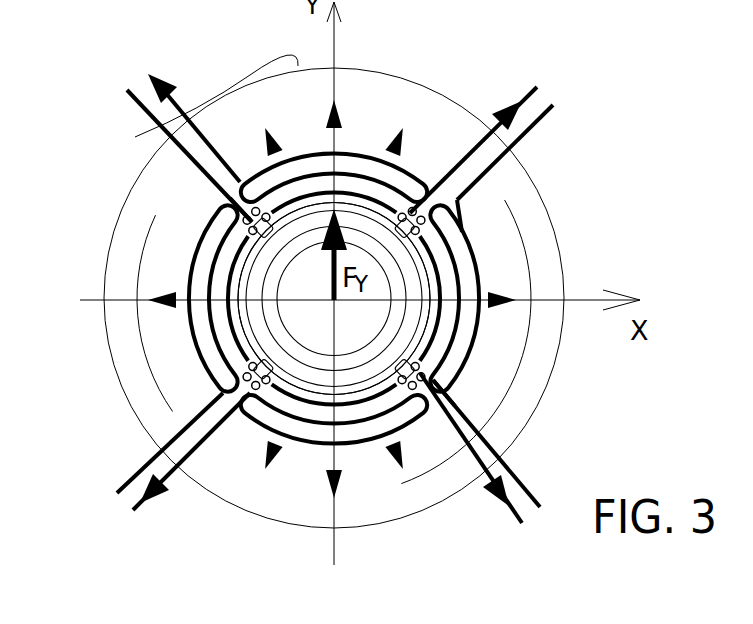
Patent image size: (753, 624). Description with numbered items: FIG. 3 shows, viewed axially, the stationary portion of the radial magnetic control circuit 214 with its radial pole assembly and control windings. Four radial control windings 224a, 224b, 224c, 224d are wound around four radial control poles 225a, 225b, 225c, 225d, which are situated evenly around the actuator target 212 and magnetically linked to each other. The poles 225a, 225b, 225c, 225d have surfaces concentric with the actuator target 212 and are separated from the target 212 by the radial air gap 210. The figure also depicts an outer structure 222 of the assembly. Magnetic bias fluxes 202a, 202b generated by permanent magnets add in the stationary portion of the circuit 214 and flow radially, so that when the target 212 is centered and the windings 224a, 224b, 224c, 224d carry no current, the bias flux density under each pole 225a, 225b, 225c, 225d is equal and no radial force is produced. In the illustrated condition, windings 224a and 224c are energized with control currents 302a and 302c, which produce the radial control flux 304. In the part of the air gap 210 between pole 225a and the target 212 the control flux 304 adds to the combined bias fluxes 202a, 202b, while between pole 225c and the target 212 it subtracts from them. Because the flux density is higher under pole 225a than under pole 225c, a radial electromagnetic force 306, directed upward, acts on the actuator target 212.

The magnetic bias flux 202a is at (325, 138).
The magnetic bias flux 202b is at (296, 201).
The radial air gap 210 is at (470, 347).
The actuator target 212 is at (205, 196).
The radial magnetic control circuit 214 is at (108, 340).
The inner frame arc 222 is at (147, 425).
The radial control winding 224a is at (371, 135).
The radial control winding 224b is at (480, 232).
The radial control winding 224c is at (362, 462).
The radial control winding 224d is at (195, 242).
The radial control pole 225a is at (380, 128).
The radial control pole 225b is at (487, 280).
The radial control pole 225c is at (348, 460).
The radial control pole 225d is at (177, 270).
The control current 302a is at (176, 97).
The control current 302c is at (165, 505).
The radial control flux 304 is at (175, 192).
The radial electromagnetic force 306 is at (420, 135).